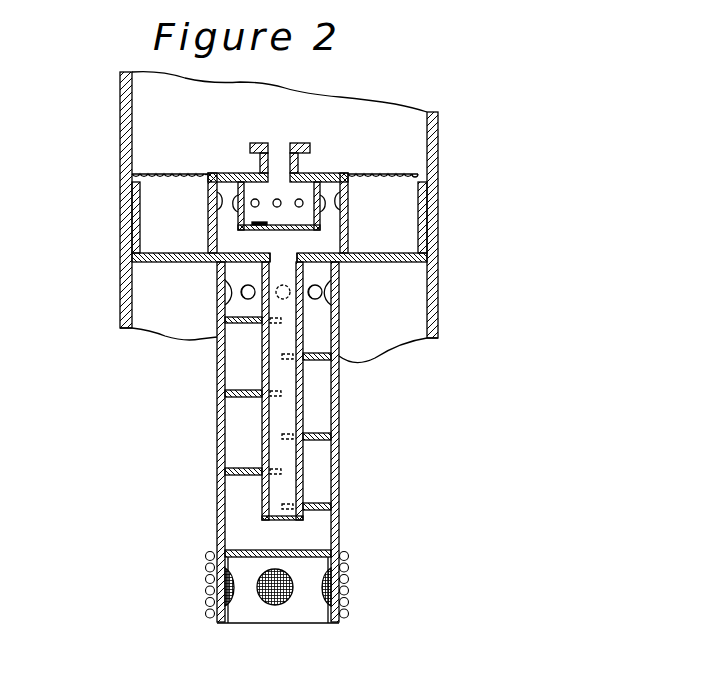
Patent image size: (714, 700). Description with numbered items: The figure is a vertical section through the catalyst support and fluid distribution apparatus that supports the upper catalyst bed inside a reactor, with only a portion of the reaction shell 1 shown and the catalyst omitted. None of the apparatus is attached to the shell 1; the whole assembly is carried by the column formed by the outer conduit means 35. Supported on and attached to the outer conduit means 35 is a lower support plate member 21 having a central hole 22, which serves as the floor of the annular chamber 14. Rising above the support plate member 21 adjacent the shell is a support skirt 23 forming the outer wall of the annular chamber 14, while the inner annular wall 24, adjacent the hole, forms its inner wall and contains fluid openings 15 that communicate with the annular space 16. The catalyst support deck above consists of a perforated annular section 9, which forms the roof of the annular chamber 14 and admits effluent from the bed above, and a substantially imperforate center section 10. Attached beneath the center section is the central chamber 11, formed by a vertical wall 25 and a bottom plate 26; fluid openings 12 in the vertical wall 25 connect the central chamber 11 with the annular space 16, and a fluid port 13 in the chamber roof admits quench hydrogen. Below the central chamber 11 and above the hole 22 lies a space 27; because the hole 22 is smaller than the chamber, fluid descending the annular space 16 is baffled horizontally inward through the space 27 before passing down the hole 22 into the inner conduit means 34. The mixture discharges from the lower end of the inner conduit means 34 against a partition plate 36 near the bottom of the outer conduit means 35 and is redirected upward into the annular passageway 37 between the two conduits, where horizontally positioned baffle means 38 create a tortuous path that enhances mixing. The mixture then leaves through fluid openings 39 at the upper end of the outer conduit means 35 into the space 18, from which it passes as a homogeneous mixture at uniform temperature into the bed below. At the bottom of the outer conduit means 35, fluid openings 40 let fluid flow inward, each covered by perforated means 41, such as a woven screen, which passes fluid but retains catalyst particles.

The reaction shell 1 is at (120, 164).
The perforated annular section 9 is at (182, 175).
The imperforate center section 10 is at (217, 174).
The central chamber 11 is at (266, 212).
The fluid openings 12 is at (301, 199).
The fluid port 13 is at (257, 143).
The annular chamber 14 is at (179, 226).
The fluid openings 15 is at (350, 207).
The annular space 16 is at (331, 203).
The space 18 is at (390, 316).
The lower support plate member 21 is at (183, 262).
The central hole 22 is at (289, 243).
The support skirt 23 is at (420, 228).
The inner annular wall 24 is at (350, 225).
The vertical wall 25 is at (233, 190).
The bottom plate 26 is at (289, 231).
The space 27 is at (251, 251).
The inner conduit means 34 is at (262, 343).
The outer conduit means 35 is at (340, 541).
The partition plate 36 is at (250, 550).
The annular passageway 37 is at (313, 404).
The baffle means 38 is at (313, 357).
The fluid openings 39 is at (218, 302).
The fluid openings 40 is at (262, 598).
The perforated means 41 is at (212, 602).